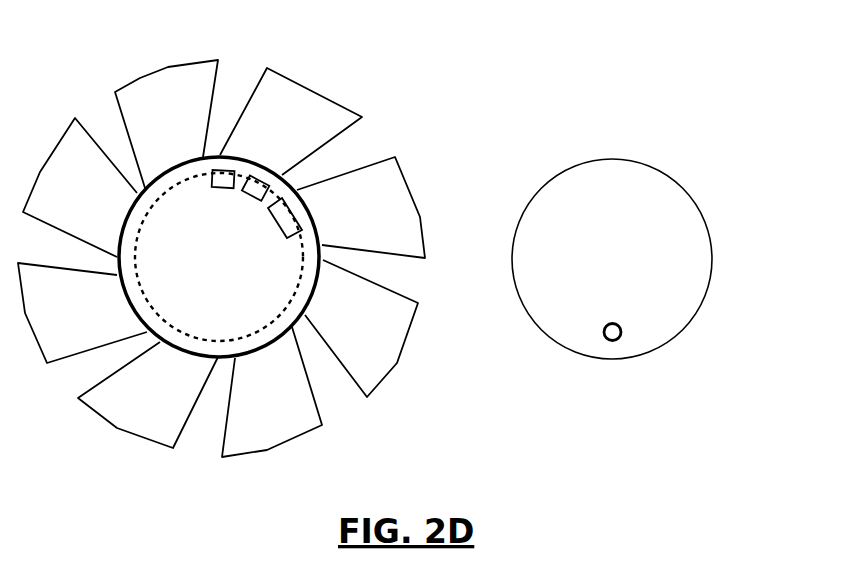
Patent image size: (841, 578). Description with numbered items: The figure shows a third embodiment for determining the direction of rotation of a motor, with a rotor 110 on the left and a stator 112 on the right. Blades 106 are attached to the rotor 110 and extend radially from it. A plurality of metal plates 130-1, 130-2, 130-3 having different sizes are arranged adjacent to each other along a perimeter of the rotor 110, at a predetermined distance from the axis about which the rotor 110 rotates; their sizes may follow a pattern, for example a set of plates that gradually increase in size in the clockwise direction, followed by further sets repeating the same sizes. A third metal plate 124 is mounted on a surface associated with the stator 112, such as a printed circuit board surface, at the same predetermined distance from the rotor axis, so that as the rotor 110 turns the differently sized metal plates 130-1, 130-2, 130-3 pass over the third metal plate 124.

The blades 106 is at (307, 85).
The rotor 110 is at (205, 165).
The stator 112 is at (633, 160).
The third metal plate 124 is at (621, 327).
The metal plate 130-1 is at (218, 188).
The metal plate 130-2 is at (247, 197).
The metal plate 130-3 is at (285, 238).